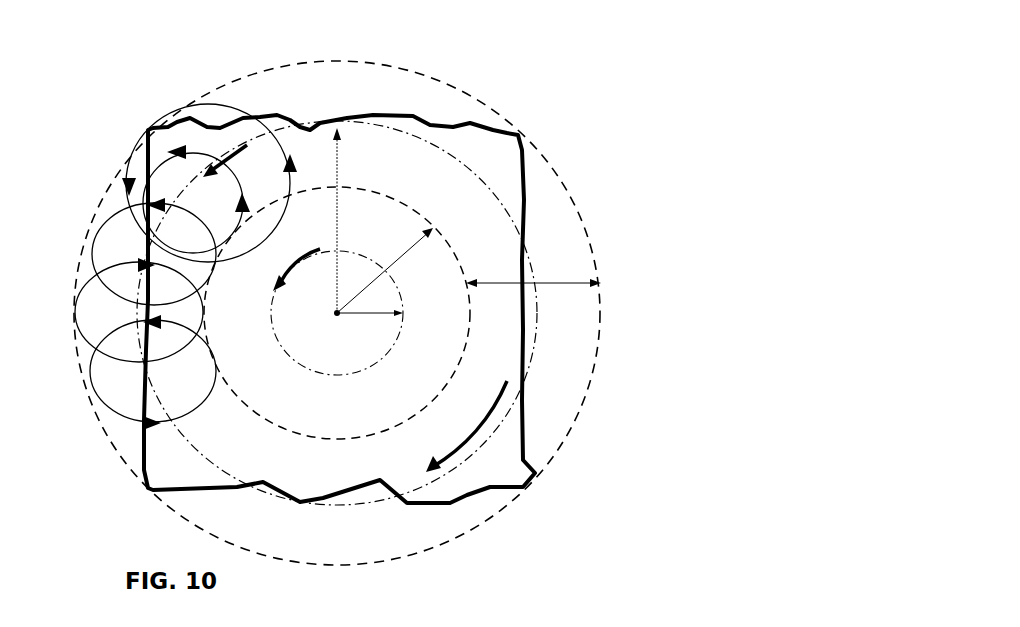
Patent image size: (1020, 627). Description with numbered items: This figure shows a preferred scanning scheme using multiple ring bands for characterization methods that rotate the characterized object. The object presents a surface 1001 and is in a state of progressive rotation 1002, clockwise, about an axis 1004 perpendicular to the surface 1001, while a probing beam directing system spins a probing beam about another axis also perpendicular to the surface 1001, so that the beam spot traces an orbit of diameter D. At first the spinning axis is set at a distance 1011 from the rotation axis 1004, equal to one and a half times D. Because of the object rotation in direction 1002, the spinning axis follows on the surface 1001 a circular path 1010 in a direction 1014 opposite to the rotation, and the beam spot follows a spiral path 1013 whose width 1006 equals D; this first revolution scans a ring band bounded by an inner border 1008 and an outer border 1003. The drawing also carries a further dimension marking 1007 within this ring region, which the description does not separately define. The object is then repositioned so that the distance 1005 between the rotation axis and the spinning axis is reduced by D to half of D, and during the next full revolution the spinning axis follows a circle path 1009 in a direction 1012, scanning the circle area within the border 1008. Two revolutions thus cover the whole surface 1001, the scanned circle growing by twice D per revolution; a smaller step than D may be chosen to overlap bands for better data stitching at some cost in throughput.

The surface 1001 is at (483, 430).
The progressive rotation 1002 is at (500, 472).
The outer border 1003 is at (565, 438).
The axis 1004 is at (340, 318).
The distance 1005 is at (373, 325).
The width 1006 is at (573, 280).
The radial distance D 1007 is at (403, 253).
The inner border 1008 is at (420, 210).
The circle path 1009 is at (342, 218).
The circular path 1010 is at (453, 150).
The distance 1011 is at (353, 257).
The direction 1012 is at (303, 253).
The spiral path 1013 is at (228, 106).
The direction 1014 is at (200, 150).